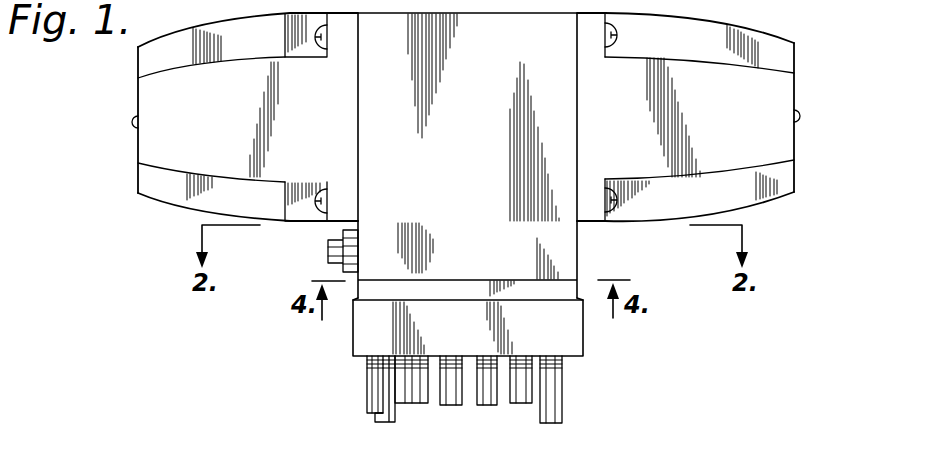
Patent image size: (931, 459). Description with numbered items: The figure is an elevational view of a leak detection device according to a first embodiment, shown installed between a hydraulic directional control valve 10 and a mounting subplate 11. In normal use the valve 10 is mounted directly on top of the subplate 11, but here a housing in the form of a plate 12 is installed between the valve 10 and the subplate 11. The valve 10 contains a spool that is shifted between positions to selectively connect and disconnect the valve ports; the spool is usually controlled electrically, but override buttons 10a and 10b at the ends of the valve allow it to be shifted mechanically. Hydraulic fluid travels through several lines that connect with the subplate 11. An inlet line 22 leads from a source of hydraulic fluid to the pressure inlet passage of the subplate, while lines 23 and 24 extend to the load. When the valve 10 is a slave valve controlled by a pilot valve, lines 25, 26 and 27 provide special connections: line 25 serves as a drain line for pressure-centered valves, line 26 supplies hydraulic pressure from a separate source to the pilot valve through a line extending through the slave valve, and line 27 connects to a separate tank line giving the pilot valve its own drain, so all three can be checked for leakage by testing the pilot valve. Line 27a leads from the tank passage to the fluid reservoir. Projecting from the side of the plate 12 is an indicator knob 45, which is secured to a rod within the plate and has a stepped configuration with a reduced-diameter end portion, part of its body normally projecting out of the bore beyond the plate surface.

The hydraulic directional control valve 10 is at (176, 216).
The override button 10a is at (802, 116).
The override button 10b is at (134, 122).
The mounting subplate 11 is at (587, 336).
The plate 12 is at (572, 250).
The indicator knob 45 is at (321, 252).
The inlet line 22 is at (488, 399).
The line 23 is at (454, 404).
The line 24 is at (513, 403).
The drain line 25 is at (366, 391).
The pilot pressure supply line 26 is at (394, 422).
The separate tank line 27 is at (547, 420).
The tank line 27a is at (412, 398).